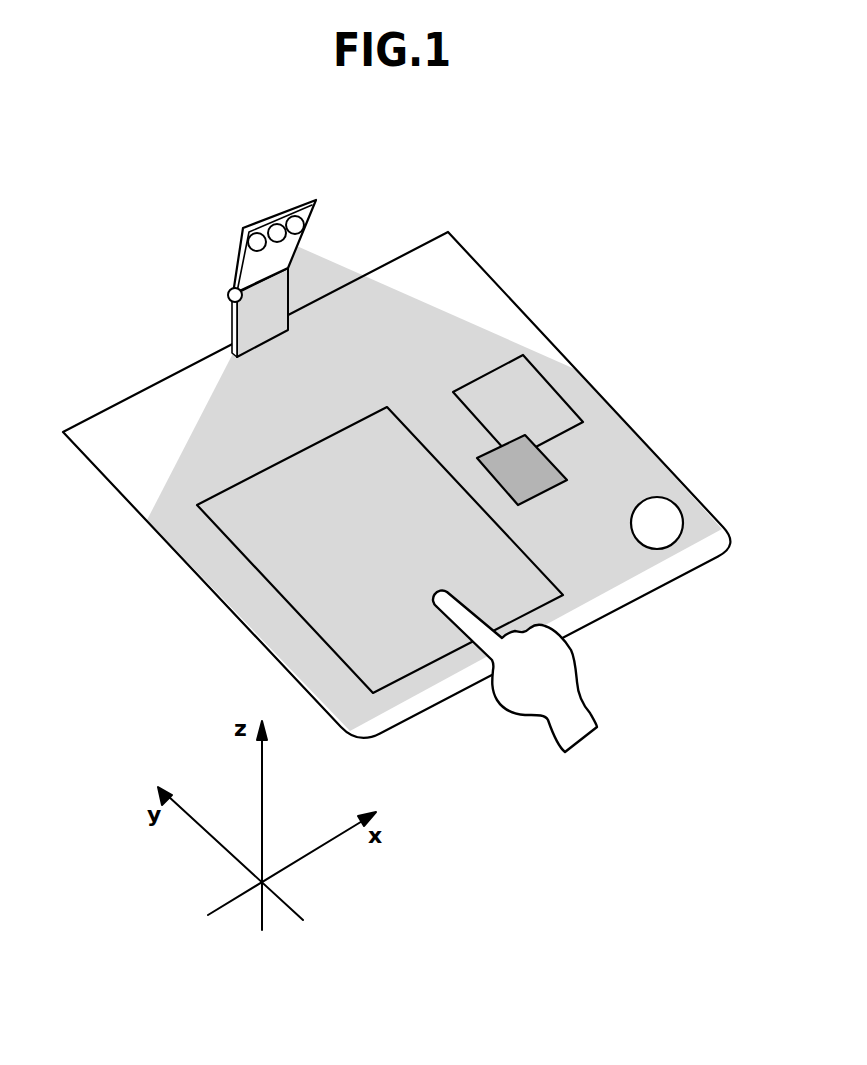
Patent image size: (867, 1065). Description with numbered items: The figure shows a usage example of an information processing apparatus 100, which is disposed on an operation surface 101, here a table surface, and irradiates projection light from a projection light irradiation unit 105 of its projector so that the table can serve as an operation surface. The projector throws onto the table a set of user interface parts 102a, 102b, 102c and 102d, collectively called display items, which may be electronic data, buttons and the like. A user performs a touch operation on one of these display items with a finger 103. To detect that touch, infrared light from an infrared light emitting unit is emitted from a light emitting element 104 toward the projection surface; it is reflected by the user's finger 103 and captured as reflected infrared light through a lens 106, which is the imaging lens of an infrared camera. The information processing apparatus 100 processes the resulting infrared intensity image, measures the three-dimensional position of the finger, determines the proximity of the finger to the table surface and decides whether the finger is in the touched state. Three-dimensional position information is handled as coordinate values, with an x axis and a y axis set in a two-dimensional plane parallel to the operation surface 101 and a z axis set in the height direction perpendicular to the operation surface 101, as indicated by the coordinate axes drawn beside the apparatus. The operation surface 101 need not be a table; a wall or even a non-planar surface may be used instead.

The information processing apparatus 100 is at (232, 258).
The operation surface 101 is at (128, 502).
The user interface part (display item) 102a is at (290, 456).
The user interface part (display item) 102b is at (558, 468).
The user interface part (display item) 102c is at (556, 392).
The user interface part (display item) 102d is at (671, 503).
The finger 103 is at (590, 710).
The light emitting element 104 is at (305, 224).
The projection light irradiation unit 105 is at (274, 223).
The lens 106 is at (256, 232).